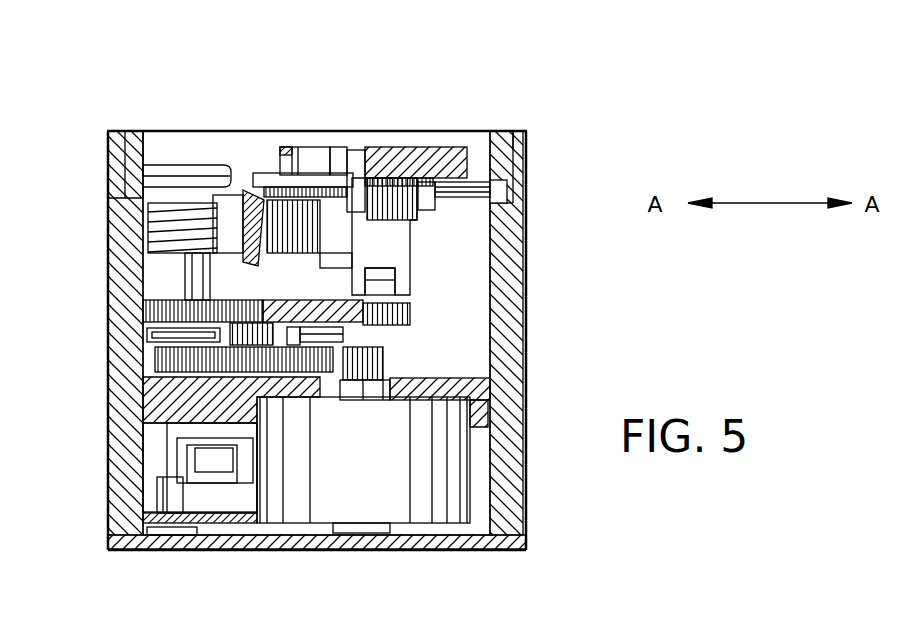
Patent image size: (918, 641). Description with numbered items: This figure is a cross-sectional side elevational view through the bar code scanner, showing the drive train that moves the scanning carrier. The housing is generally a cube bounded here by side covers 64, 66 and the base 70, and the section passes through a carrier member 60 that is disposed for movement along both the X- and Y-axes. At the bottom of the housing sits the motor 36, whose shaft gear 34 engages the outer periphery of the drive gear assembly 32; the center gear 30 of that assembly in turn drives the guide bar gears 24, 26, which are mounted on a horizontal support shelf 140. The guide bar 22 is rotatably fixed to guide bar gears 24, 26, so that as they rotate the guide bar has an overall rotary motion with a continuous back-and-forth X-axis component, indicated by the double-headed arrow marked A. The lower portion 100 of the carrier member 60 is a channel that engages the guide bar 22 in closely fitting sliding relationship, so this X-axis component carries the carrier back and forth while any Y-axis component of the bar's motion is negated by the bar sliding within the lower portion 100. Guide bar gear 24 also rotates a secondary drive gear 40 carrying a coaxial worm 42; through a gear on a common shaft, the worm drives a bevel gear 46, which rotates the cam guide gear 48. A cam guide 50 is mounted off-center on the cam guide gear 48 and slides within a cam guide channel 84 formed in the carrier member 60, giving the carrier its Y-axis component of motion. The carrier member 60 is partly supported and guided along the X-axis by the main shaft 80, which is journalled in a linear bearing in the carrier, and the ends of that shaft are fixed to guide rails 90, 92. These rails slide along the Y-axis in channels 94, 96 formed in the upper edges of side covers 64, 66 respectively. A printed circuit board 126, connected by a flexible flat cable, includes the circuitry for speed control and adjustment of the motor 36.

The guide bar 22 is at (378, 294).
The guide bar gear 24 is at (400, 323).
The guide bar gear 26 is at (392, 352).
The center gear 30 is at (158, 330).
The drive gear assembly 32 is at (162, 356).
The shaft gear 34 is at (388, 382).
The motor 36 is at (397, 490).
The secondary drive gear 40 is at (160, 316).
The worm 42 is at (160, 237).
The bevel gear 46 is at (244, 192).
The cam guide gear 48 is at (265, 186).
The cam guide 50 is at (302, 163).
The carrier member 60 is at (380, 228).
The side cover 64 is at (125, 458).
The side cover 66 is at (507, 500).
The base 70 is at (287, 540).
The main shaft 80 is at (165, 178).
The cam guide channel 84 is at (437, 147).
The guide rail 90 is at (163, 133).
The guide rail 92 is at (505, 172).
The channel 94 is at (122, 112).
The channel 96 is at (513, 112).
The lower portion of carrier member 100 is at (362, 273).
The printed circuit board 126 is at (217, 527).
The horizontal support shelf 140 is at (162, 395).